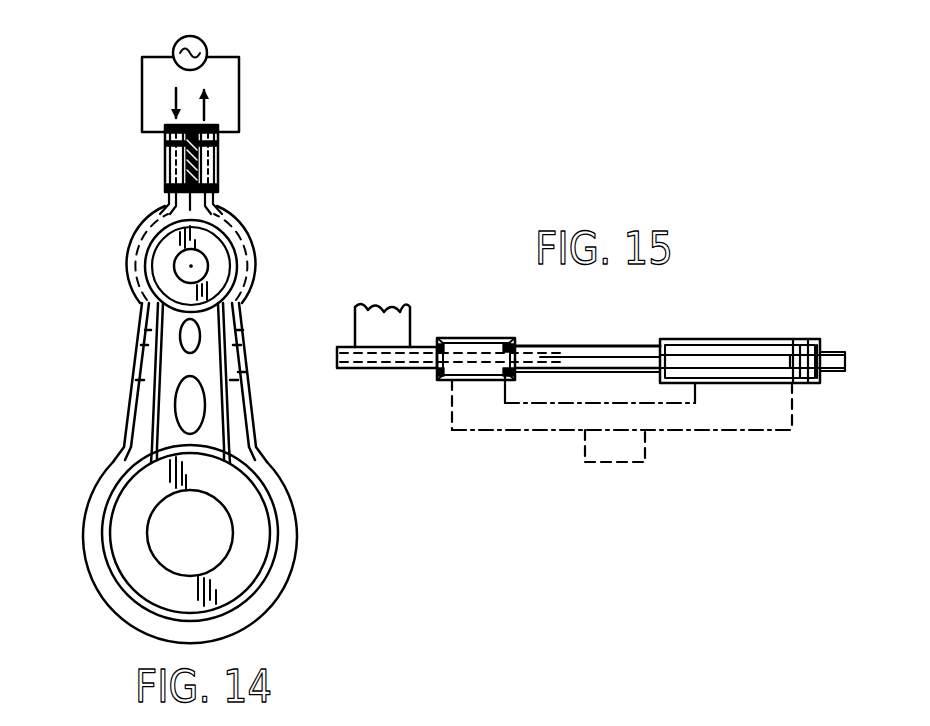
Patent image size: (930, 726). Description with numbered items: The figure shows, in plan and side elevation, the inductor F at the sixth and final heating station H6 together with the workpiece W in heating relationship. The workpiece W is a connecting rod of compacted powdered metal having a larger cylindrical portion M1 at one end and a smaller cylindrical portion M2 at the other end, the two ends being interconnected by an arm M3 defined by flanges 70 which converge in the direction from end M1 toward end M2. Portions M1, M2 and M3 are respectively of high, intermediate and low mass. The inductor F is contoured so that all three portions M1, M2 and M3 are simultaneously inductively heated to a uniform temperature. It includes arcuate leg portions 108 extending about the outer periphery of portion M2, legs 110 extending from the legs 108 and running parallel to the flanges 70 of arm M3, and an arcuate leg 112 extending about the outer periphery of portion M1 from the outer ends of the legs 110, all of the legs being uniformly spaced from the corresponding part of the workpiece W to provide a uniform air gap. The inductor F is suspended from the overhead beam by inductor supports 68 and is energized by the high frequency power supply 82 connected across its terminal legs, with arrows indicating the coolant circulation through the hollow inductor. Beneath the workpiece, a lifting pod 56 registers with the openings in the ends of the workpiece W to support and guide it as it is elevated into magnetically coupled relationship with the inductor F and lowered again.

In FIG. 14, the high frequency power supply 82 is at (207, 46).
In FIG. 14, the inductor supports 68 is at (216, 152).
In FIG. 15, the inductor supports 68 is at (380, 312).
In FIG. 14, the arcuate leg portions 108 is at (140, 250).
In FIG. 15, the arcuate leg portions 108 is at (455, 356).
In FIG. 14, the flanges 70 is at (160, 418).
In FIG. 14, the cylindrical portion M2 is at (215, 247).
In FIG. 15, the cylindrical portion M2 is at (490, 343).
In FIG. 14, the legs 110 is at (147, 326).
In FIG. 15, the legs 110 is at (563, 360).
In FIG. 14, the sixth heating station H6 is at (110, 292).
In FIG. 15, the sixth heating station H6 is at (470, 294).
In FIG. 14, the inductor F is at (132, 348).
In FIG. 15, the inductor F is at (700, 352).
In FIG. 14, the workpiece W is at (228, 365).
In FIG. 15, the workpiece W is at (714, 388).
In FIG. 14, the arm M3 is at (156, 386).
In FIG. 15, the arm M3 is at (600, 346).
In FIG. 14, the arcuate leg 112 is at (283, 515).
In FIG. 15, the arcuate leg 112 is at (834, 355).
In FIG. 14, the cylindrical portion M1 is at (140, 584).
In FIG. 15, the cylindrical portion M1 is at (766, 345).
In FIG. 15, the lifting pods 56 is at (738, 436).